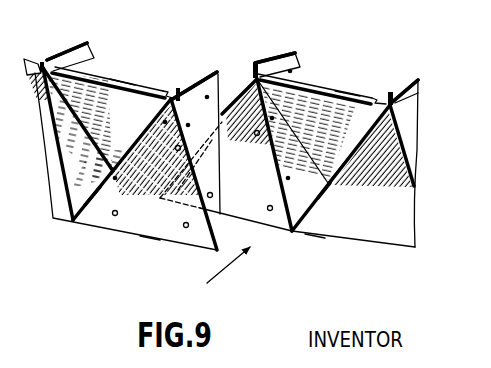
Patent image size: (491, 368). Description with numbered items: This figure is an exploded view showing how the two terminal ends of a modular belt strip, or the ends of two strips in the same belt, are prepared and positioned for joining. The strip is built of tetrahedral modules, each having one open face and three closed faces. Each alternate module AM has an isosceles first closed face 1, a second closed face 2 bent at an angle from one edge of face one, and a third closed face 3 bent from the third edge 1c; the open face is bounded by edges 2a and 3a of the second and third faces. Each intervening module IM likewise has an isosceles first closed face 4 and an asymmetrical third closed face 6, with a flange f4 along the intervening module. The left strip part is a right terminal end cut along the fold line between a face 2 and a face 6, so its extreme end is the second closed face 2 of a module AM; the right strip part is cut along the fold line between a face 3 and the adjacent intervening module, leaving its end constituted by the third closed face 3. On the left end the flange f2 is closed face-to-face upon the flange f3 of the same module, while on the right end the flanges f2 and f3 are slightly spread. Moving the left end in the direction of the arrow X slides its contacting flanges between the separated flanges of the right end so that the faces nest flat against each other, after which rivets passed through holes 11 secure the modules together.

The first closed face 1 is at (103, 222).
The third edge of the first face 1c is at (97, 207).
The holes 11 is at (115, 216).
The second closed face 2 is at (84, 62).
The edge of the second face 2a is at (185, 199).
The third closed face 3 is at (140, 136).
The edge of the third face 3a is at (228, 118).
The first closed face of intervening module 4 is at (126, 119).
The third closed face of intervening module 6 is at (83, 172).
The intervening module IM is at (102, 66).
The alternate module AM is at (148, 240).
The arrow X is at (228, 269).
The flange of second face f2 is at (414, 79).
The flange of third face f3 is at (388, 93).
The flange of first face of intervening module f4 is at (358, 66).